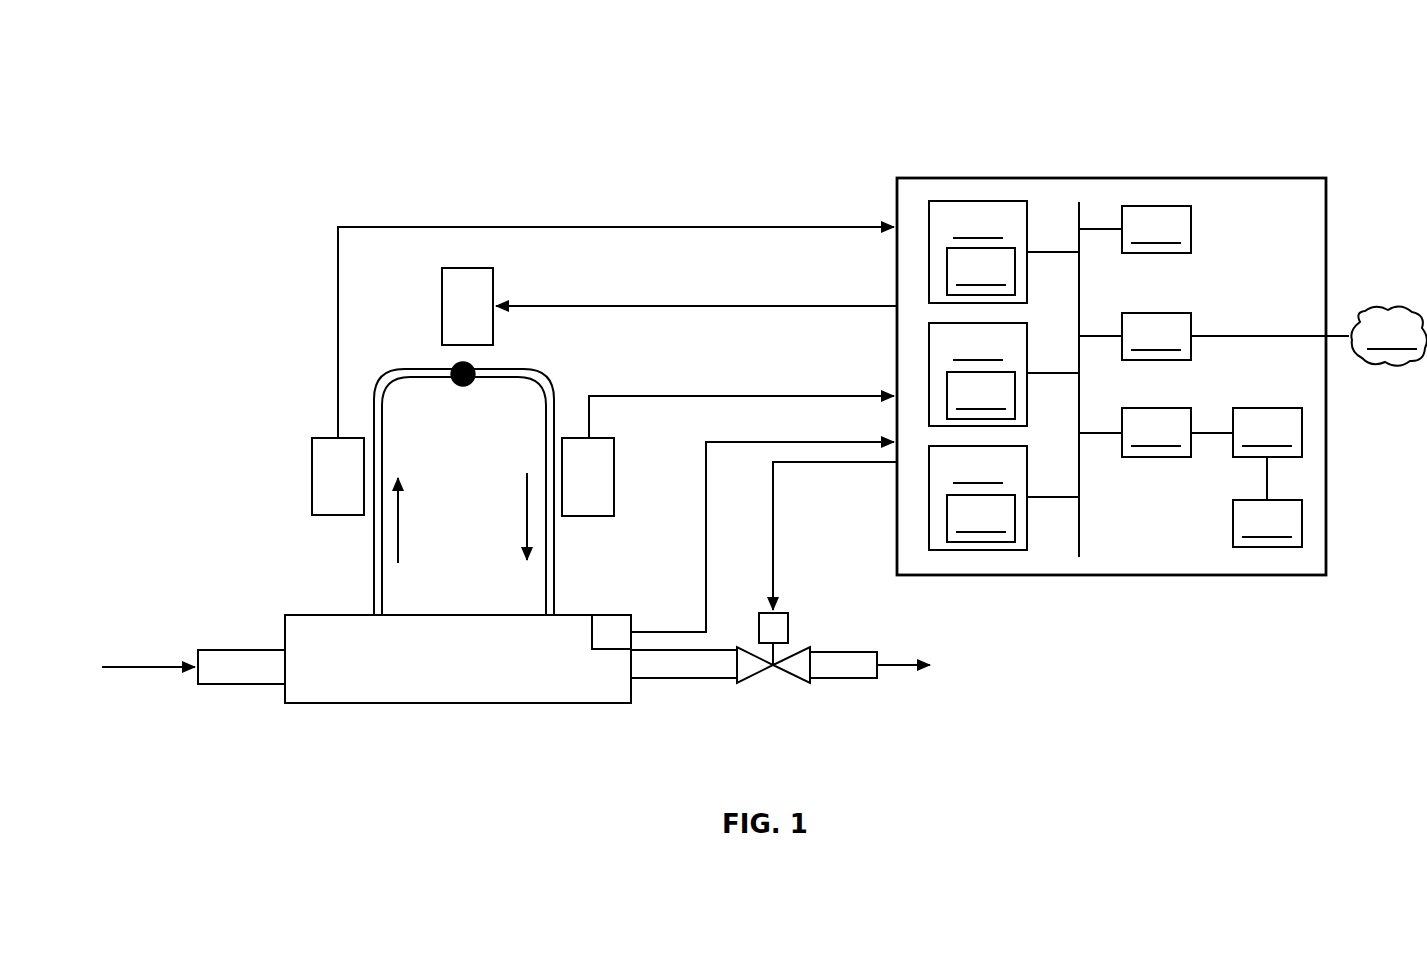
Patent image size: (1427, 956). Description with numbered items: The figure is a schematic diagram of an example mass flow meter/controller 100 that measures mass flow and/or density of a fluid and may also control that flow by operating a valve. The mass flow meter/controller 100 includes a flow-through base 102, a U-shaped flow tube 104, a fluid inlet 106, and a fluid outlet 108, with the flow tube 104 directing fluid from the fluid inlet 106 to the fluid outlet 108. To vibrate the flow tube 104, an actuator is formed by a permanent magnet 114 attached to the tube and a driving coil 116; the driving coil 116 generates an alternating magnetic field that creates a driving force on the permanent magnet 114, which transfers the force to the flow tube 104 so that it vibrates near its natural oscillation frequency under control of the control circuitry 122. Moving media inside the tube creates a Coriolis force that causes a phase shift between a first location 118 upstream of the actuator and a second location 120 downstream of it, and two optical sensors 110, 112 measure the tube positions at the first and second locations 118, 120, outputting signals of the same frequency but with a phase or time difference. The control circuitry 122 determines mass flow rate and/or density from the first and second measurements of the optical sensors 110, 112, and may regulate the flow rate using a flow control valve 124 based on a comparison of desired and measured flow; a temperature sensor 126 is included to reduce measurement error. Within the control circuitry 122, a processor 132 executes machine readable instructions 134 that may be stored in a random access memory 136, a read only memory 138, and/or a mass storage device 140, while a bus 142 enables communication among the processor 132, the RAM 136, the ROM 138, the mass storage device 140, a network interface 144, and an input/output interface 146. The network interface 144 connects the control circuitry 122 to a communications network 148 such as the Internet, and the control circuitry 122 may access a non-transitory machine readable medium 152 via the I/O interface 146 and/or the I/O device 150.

The mass flow meter/controller 100 is at (252, 68).
The flow-through base 102 is at (330, 614).
The flow tube 104 is at (373, 562).
The fluid inlet 106 is at (222, 650).
The fluid outlet 108 is at (850, 652).
The optical sensor 110 is at (312, 475).
The optical sensor 112 is at (614, 478).
The permanent magnet 114 is at (455, 365).
The driving coil 116 is at (442, 303).
The first location 118 is at (384, 430).
The second location 120 is at (545, 460).
The control circuitry 122 is at (970, 177).
The flow control valve 124 is at (752, 650).
The temperature sensor 126 is at (612, 623).
The processor 132 is at (1004, 498).
The machine readable instructions 134 is at (981, 395).
The random access memory 136 is at (1004, 252).
The read only memory 138 is at (1004, 374).
The mass storage device 140 is at (1135, 229).
The bus 142 is at (1083, 405).
The network interface 144 is at (1214, 336).
The input/output interface 146 is at (1156, 432).
The communications network 148 is at (1389, 335).
The I/O device 150 is at (1267, 432).
The non-transitory machine readable medium 152 is at (1267, 502).